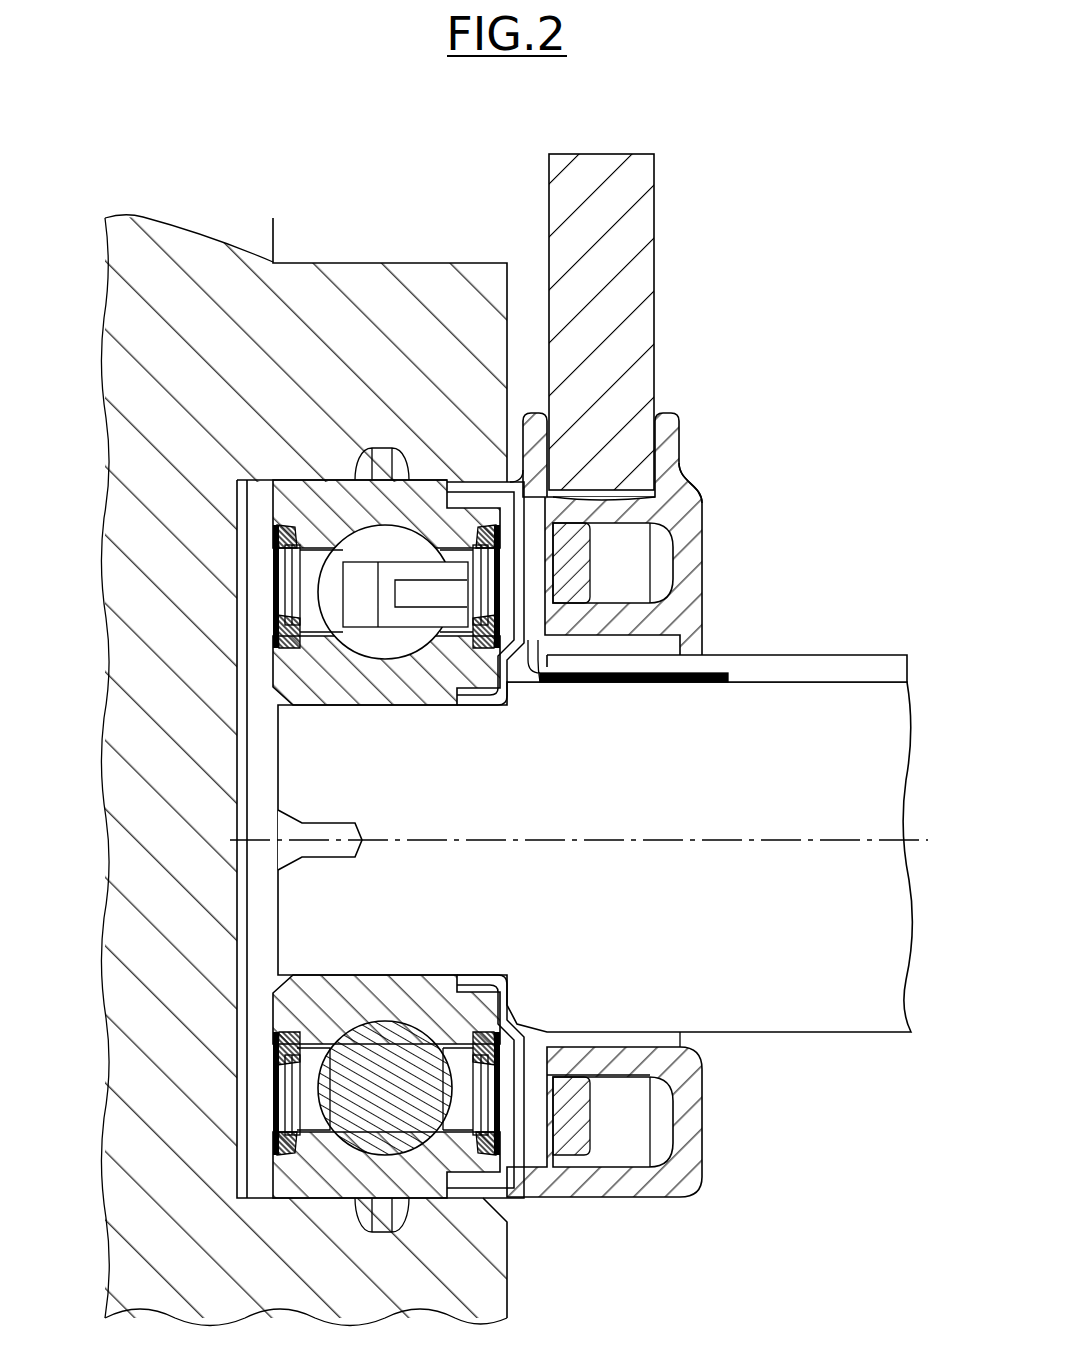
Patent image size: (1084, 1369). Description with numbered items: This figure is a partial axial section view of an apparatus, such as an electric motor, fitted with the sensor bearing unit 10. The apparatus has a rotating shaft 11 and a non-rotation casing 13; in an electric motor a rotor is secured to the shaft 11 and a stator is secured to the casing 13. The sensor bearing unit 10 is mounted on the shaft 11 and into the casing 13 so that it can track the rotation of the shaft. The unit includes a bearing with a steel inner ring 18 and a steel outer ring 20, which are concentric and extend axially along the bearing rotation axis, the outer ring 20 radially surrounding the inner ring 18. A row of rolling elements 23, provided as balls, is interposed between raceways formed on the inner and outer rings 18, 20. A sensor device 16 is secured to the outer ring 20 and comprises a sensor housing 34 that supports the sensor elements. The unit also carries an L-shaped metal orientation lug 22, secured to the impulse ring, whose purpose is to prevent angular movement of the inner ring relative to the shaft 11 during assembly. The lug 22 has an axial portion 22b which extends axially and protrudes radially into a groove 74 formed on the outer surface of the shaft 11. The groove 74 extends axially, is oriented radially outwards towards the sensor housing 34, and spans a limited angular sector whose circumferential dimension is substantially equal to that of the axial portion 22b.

The sensor bearing unit 10 is at (694, 329).
The rotating shaft 11 is at (896, 763).
The non-rotation casing 13 is at (368, 272).
The sensor device 16 is at (735, 533).
The inner ring 18 is at (315, 1006).
The outer ring 20 is at (315, 1160).
The orientation lug 22 is at (680, 664).
The axial portion 22b is at (714, 668).
The rolling elements 23 is at (402, 1099).
The sensor housing 34 is at (712, 491).
The groove 74 is at (843, 664).